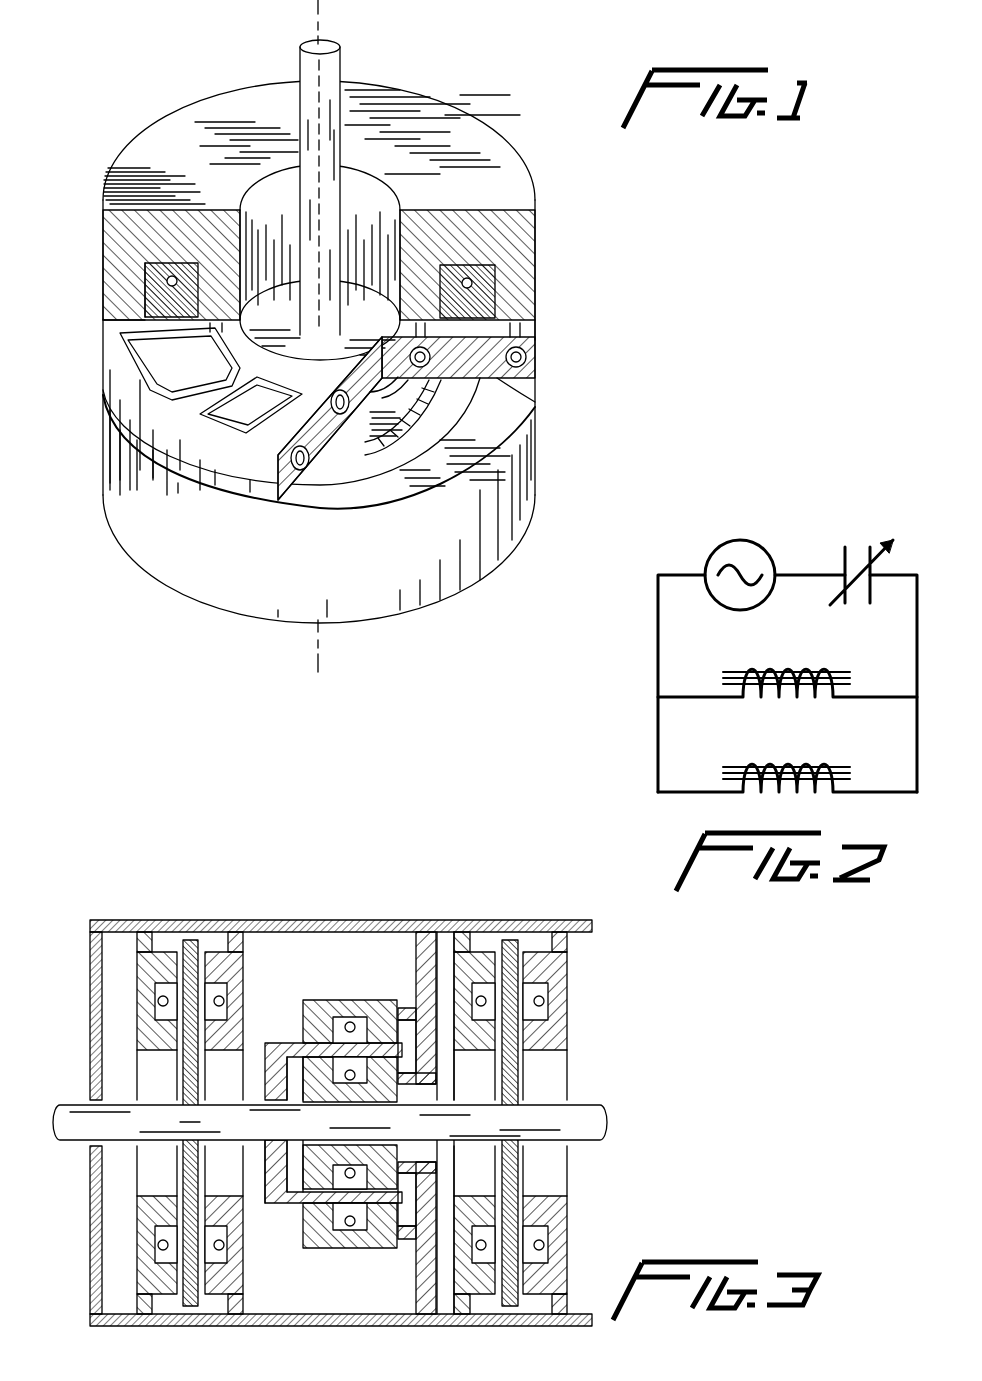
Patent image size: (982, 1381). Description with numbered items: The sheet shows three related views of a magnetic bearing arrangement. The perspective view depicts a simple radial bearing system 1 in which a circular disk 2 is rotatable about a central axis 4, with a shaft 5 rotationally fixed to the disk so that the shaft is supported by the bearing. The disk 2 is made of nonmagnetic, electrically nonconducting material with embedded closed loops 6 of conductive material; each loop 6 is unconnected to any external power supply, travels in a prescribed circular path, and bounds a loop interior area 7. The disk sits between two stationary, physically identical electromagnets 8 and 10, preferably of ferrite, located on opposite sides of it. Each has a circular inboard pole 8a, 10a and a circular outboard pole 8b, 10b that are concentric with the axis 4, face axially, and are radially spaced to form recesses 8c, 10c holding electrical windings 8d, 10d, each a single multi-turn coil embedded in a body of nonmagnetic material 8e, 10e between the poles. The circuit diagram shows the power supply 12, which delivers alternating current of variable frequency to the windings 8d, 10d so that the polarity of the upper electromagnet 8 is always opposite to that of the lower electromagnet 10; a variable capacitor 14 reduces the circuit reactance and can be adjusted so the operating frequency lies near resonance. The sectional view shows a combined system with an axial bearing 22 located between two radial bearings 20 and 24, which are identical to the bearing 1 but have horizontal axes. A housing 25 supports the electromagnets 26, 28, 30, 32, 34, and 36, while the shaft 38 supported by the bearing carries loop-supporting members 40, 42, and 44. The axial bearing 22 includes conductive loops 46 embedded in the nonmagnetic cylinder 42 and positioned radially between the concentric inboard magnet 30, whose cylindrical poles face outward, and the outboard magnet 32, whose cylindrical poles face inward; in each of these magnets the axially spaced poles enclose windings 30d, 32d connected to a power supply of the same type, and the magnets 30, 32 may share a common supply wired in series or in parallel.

In FIG. 1, the radial bearing system 1 is at (530, 148).
In FIG. 1, the circular disk 2 is at (540, 350).
In FIG. 1, the central axis 4 is at (318, 8).
In FIG. 1, the shaft 5 is at (340, 70).
In FIG. 1, the closed loops 6 is at (155, 397).
In FIG. 1, the loop interior area 7 is at (140, 348).
In FIG. 1, the electromagnet 8 is at (530, 235).
In FIG. 1, the inboard pole 8a is at (258, 353).
In FIG. 1, the outboard pole 8b is at (537, 335).
In FIG. 1, the recess 8c is at (122, 300).
In FIG. 1, the electrical winding 8d is at (172, 278).
In FIG. 2, the electrical winding 8d is at (743, 677).
In FIG. 1, the body of nonmagnetic material 8e is at (145, 275).
In FIG. 1, the electromagnet 10 is at (447, 572).
In FIG. 1, the inboard pole 10a is at (422, 392).
In FIG. 1, the outboard pole 10b is at (503, 440).
In FIG. 1, the recess 10c is at (467, 427).
In FIG. 2, the electrical winding 10d is at (743, 772).
In FIG. 1, the body of nonmagnetic material 10e is at (452, 423).
In FIG. 2, the power supply 12 is at (752, 548).
In FIG. 2, the variable capacitor 14 is at (856, 552).
In FIG. 3, the radial bearing 20 is at (177, 1082).
In FIG. 3, the axial bearing 22 is at (347, 1075).
In FIG. 3, the radial bearing 24 is at (583, 970).
In FIG. 3, the housing 25 is at (437, 928).
In FIG. 3, the electromagnet 26 is at (153, 1000).
In FIG. 3, the electromagnet 28 is at (237, 992).
In FIG. 3, the inboard electromagnet 30 is at (402, 1162).
In FIG. 3, the winding 30d is at (273, 1168).
In FIG. 3, the outboard electromagnet 32 is at (375, 1008).
In FIG. 3, the winding 32d is at (340, 1258).
In FIG. 3, the electromagnet 34 is at (490, 1280).
In FIG. 3, the electromagnet 36 is at (540, 1280).
In FIG. 3, the shaft 38 is at (595, 1140).
In FIG. 3, the loop-supporting member 40 is at (190, 1085).
In FIG. 3, the nonmagnetic cylinder 42 is at (285, 1045).
In FIG. 3, the loop-supporting member 44 is at (512, 1085).
In FIG. 3, the conductive loops 46 is at (322, 1037).